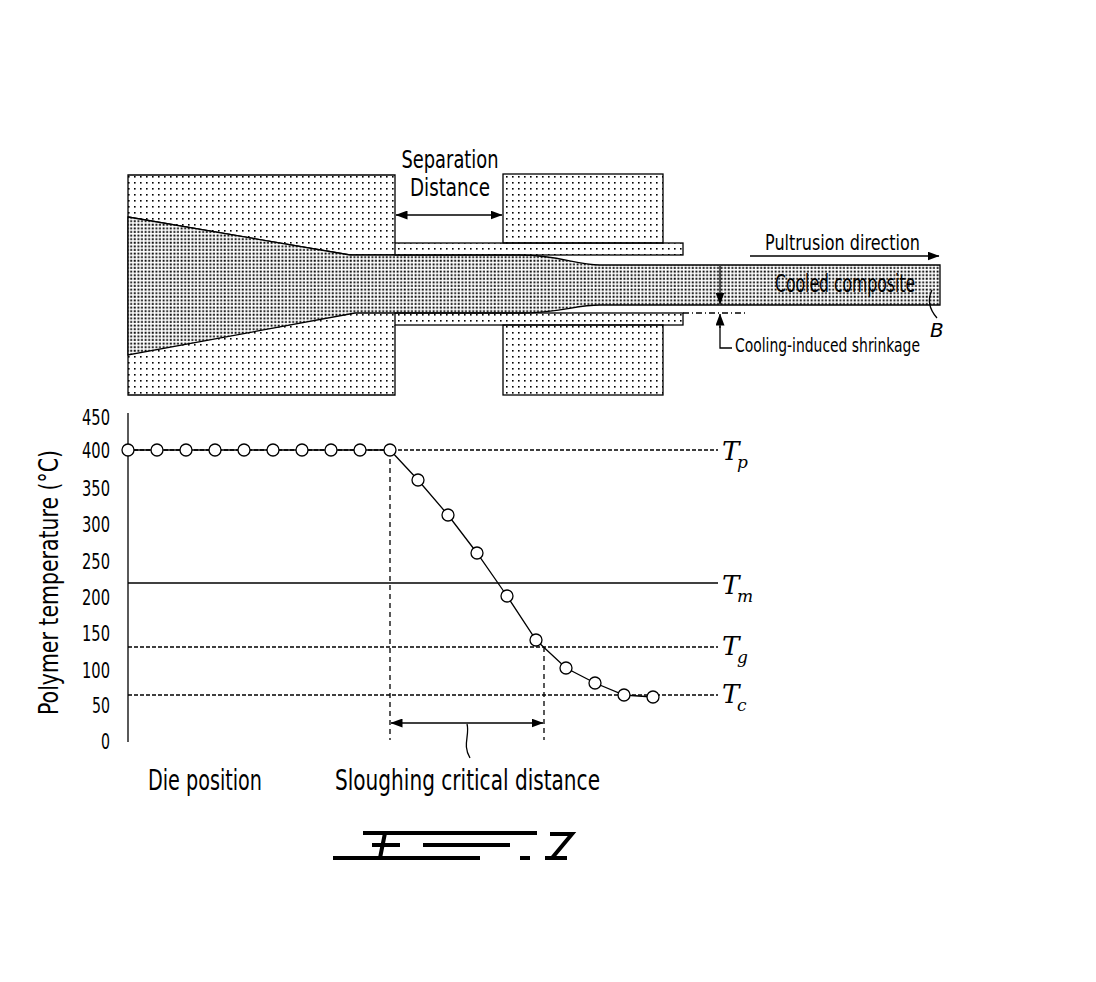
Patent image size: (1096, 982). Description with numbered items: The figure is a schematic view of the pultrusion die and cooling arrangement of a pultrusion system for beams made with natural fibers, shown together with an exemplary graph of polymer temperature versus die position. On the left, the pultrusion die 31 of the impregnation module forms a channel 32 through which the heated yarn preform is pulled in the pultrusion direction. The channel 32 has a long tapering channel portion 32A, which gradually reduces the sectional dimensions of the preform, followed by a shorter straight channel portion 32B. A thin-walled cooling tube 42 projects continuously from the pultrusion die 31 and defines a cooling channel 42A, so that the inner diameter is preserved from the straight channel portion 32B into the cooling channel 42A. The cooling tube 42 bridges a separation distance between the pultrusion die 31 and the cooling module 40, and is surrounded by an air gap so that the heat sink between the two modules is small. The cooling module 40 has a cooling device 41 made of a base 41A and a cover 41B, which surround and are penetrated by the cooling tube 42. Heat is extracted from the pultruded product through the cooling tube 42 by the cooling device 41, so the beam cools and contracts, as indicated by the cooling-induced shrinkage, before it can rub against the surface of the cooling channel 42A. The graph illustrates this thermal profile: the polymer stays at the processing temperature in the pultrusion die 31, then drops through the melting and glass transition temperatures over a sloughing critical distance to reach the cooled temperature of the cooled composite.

The pultrusion die 31 is at (115, 199).
The channel 32 is at (118, 310).
The tapering channel portion 32A is at (218, 232).
The straight channel portion 32B is at (368, 254).
The cooling module 40 is at (693, 158).
The cooling device 41 is at (543, 137).
The base 41A is at (650, 372).
The cover 41B is at (665, 203).
The cooling tube 42 is at (447, 328).
The cooling channel 42A is at (668, 264).